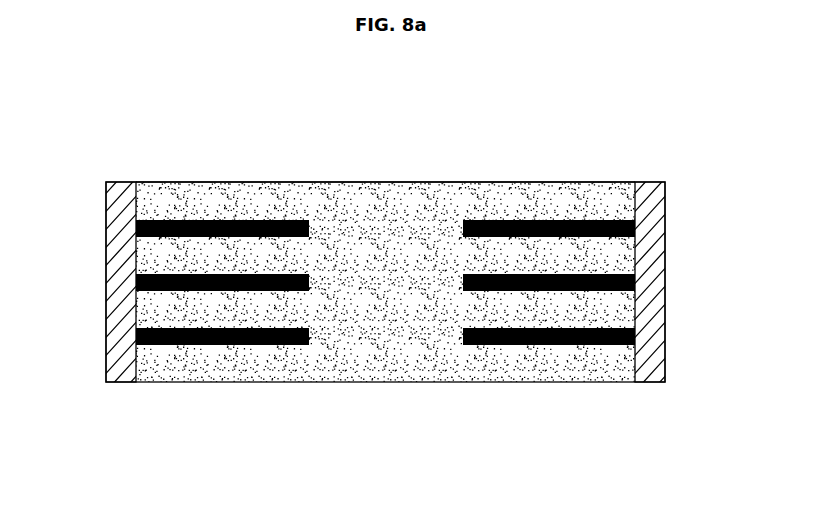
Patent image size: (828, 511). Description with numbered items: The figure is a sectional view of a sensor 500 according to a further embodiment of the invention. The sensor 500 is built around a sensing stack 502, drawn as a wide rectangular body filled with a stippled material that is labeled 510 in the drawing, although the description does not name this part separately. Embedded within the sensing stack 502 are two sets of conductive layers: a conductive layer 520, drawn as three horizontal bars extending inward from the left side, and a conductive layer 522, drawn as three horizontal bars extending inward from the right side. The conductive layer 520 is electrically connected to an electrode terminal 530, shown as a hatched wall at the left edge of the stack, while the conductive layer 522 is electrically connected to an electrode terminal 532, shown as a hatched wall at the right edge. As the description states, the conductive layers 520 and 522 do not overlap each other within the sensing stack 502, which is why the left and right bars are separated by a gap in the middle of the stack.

The sensor 500 is at (142, 102).
The sensing stack 502 is at (251, 168).
The electrolyte / separator body 510 is at (383, 184).
The conductive layer 520 is at (134, 229).
The conductive layer 522 is at (637, 229).
The electrode terminal 530 is at (118, 195).
The electrode terminal 532 is at (655, 202).